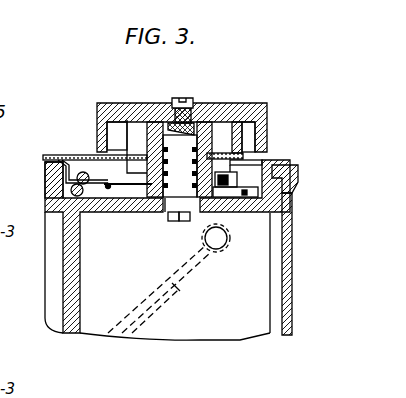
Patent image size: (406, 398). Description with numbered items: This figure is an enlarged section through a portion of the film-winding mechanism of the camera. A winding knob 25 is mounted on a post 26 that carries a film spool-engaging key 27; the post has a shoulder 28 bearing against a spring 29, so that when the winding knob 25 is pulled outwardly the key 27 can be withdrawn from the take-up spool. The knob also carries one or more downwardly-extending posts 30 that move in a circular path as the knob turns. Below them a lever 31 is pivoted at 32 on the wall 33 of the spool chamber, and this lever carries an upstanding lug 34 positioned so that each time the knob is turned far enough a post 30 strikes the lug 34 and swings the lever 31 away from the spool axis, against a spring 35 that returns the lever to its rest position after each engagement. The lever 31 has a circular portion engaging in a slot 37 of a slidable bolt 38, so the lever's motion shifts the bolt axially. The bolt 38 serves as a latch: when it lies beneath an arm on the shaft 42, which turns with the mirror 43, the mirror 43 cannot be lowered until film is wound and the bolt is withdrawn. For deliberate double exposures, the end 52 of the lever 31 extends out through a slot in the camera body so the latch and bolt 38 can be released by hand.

The winding knob 25 is at (248, 103).
The post 26 is at (185, 135).
The film spool-engaging key 27 is at (167, 214).
The shoulder 28 is at (165, 213).
The spring 29 is at (183, 221).
The downwardly-extending post 30 is at (112, 130).
The lever 31 is at (122, 182).
The pivot 32 is at (237, 212).
The wall 33 is at (233, 212).
The upstanding lug 34 is at (226, 172).
The spring 35 is at (100, 212).
The slot 37 is at (45, 203).
The slidable bolt 38 is at (68, 157).
The shaft 42 is at (212, 252).
The mirror 43 is at (128, 313).
The end of lever 52 is at (43, 163).